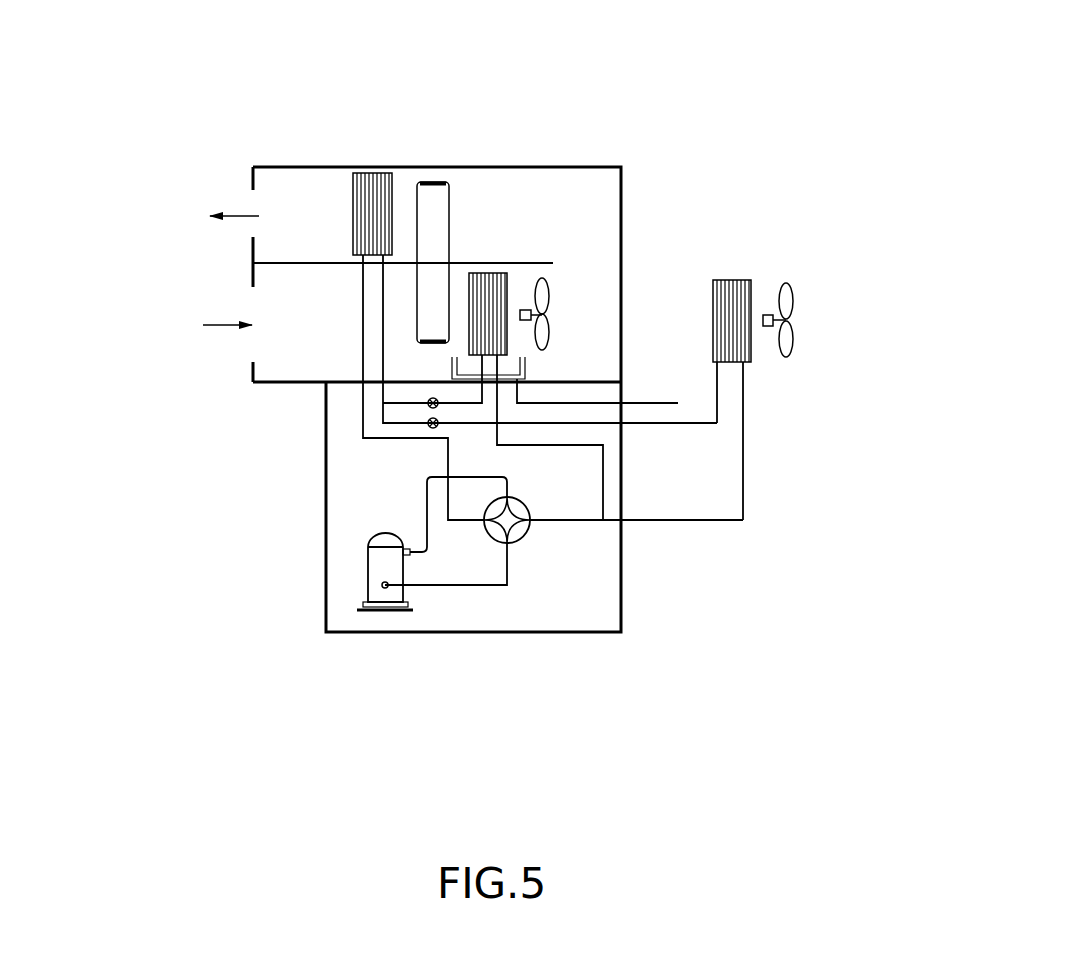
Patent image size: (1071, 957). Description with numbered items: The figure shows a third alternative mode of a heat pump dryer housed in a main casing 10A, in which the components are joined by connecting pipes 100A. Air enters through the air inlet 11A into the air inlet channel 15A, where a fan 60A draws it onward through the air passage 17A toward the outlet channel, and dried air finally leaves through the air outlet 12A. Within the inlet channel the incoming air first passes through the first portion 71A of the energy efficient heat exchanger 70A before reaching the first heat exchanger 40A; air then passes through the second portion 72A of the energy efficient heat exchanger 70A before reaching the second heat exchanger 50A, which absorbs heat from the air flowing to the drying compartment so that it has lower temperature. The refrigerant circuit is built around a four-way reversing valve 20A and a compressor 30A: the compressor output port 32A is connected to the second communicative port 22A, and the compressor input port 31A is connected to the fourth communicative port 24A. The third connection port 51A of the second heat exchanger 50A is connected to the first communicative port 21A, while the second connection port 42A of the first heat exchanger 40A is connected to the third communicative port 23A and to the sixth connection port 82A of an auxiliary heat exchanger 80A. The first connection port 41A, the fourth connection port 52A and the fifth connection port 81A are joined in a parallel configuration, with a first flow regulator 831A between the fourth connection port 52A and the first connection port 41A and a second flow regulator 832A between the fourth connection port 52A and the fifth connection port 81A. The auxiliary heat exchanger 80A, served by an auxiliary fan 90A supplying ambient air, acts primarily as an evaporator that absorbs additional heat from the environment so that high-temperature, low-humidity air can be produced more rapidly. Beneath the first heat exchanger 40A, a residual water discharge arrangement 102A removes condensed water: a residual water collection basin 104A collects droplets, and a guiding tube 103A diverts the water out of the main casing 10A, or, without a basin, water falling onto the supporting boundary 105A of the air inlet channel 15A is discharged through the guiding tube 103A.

The main casing 10A is at (620, 167).
The air inlet 11A is at (252, 348).
The air outlet 12A is at (253, 192).
The air inlet channel 15A is at (282, 311).
The air passage 17A is at (588, 233).
The four-way reversing valve 20A is at (527, 538).
The first communicative port 21A is at (482, 530).
The second communicative port 22A is at (517, 494).
The third communicative port 23A is at (540, 523).
The fourth communicative port 24A is at (515, 552).
The compressor 30A is at (370, 578).
The compressor input port 31A is at (388, 594).
The compressor output port 32A is at (413, 556).
The first heat exchanger 40A is at (505, 288).
The first connection port 41A is at (473, 358).
The second connection port 42A is at (507, 355).
The second heat exchanger 50A is at (372, 175).
The third connection port 51A is at (353, 257).
The fourth connection port 52A is at (390, 250).
The fan 60A is at (548, 287).
The energy efficient heat exchanger 70A is at (437, 202).
The first portion 71A is at (428, 302).
The second portion 72A is at (437, 227).
The auxiliary heat exchanger 80A is at (750, 280).
The fifth connection port 81A is at (722, 365).
The sixth connection port 82A is at (753, 368).
The auxiliary fan 90A is at (788, 335).
The connecting pipes 100A is at (743, 495).
The residual water discharge arrangement 102A is at (552, 358).
The guiding tube 103A is at (653, 405).
The residual water collection basin 104A is at (478, 356).
The supporting boundary 105A is at (510, 382).
The first flow regulator 831A is at (428, 408).
The second flow regulator 832A is at (428, 428).